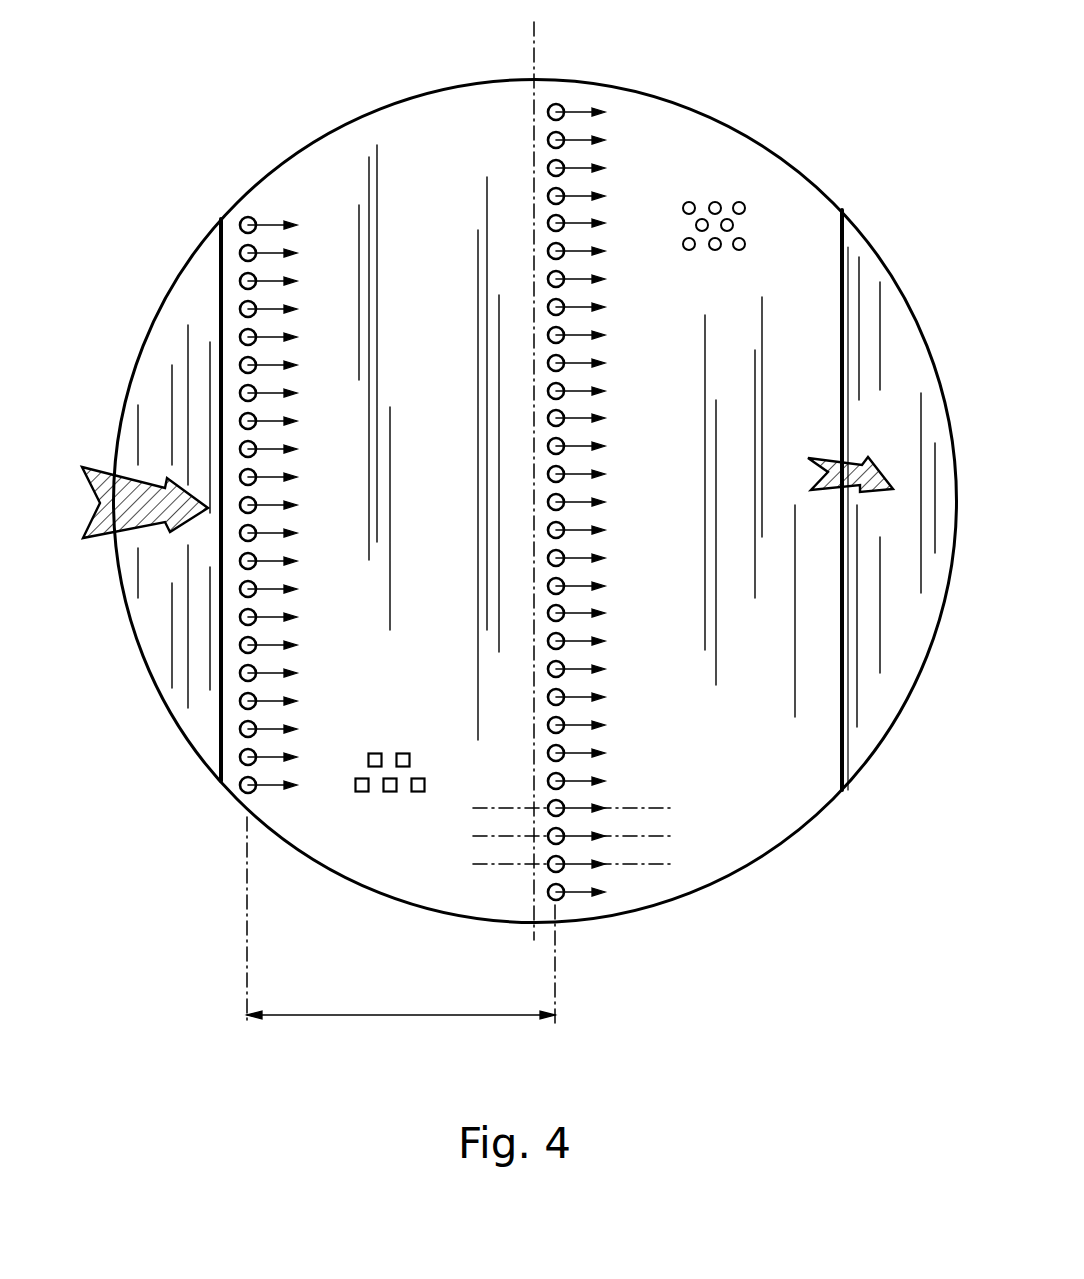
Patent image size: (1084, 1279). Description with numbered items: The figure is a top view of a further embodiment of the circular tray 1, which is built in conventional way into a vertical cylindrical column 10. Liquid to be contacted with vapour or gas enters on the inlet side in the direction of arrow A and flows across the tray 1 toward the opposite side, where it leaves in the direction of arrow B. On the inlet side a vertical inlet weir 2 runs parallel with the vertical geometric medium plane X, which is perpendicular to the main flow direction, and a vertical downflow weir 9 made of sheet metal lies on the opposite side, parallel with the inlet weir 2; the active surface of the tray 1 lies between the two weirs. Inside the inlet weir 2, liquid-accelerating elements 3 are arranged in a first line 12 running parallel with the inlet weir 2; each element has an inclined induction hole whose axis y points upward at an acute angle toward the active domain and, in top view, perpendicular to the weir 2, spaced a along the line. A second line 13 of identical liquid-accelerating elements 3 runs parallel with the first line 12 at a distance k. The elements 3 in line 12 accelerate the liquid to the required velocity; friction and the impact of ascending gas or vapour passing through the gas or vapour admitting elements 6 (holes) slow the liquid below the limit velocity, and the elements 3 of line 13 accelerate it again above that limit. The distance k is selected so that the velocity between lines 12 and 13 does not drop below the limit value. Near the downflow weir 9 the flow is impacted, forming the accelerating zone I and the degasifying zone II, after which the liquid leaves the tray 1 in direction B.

The tray 1 is at (412, 128).
The inlet weir 2 is at (220, 298).
The liquid-accelerating elements 3 is at (239, 244).
The gas or vapour admitting elements 6 is at (716, 202).
The downflow weir 9 is at (846, 245).
The column 10 is at (293, 147).
The first liquid-accelerating line of elements 12 is at (244, 808).
The second liquid-accelerating line of elements 13 is at (548, 72).
The vertical geometric medium plane X is at (536, 25).
The nozzle spacing a is at (590, 137).
The axis of the vapour or gas induction holes y is at (292, 424).
The distance between the liquid-accelerating lines of elements k is at (390, 1015).
The inlet direction A is at (104, 480).
The outlet direction B is at (850, 463).
The accelerating zone I is at (268, 840).
The degasifying zone II is at (746, 872).